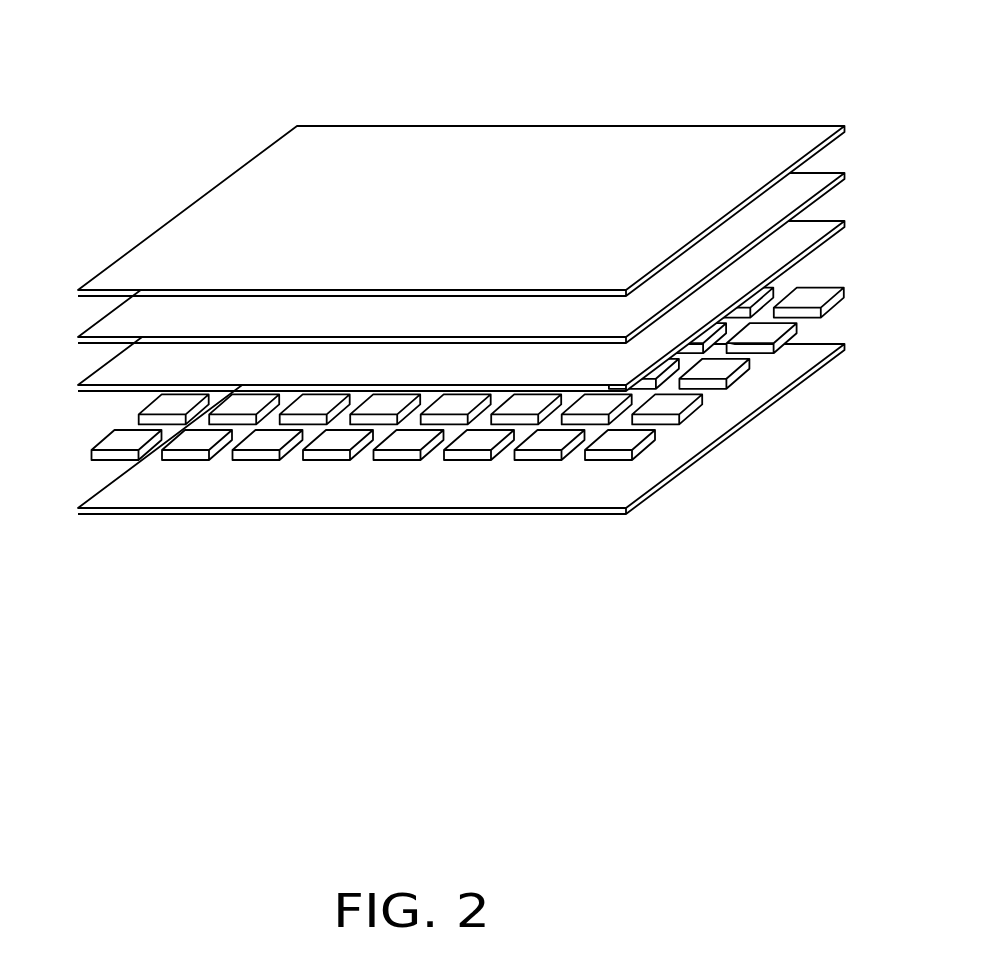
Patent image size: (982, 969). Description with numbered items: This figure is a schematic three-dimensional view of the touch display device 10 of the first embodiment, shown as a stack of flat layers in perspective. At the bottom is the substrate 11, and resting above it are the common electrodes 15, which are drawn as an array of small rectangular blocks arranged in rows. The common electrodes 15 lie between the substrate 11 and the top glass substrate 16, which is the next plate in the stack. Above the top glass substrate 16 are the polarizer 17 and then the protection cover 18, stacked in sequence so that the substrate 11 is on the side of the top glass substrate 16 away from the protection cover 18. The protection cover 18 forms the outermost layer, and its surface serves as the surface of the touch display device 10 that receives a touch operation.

The touch display device 10 is at (434, 257).
The substrate 11 is at (108, 495).
The common electrodes 15 is at (115, 439).
The top glass substrate 16 is at (113, 373).
The polarizer 17 is at (122, 325).
The protection cover 18 is at (127, 273).